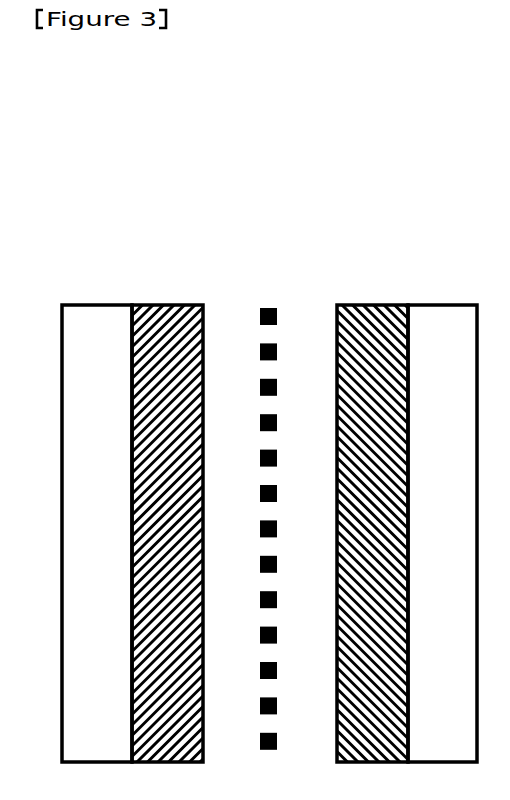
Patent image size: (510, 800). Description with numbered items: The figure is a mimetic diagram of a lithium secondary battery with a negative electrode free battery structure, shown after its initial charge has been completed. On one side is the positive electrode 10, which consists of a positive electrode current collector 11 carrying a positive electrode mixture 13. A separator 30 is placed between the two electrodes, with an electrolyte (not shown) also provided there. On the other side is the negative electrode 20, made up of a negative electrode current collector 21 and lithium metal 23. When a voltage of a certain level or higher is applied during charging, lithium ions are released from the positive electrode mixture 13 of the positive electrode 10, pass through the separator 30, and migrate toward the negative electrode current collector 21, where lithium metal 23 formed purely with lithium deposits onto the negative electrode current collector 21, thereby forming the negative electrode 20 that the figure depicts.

The positive electrode 10 is at (202, 141).
The positive electrode current collector 11 is at (101, 305).
The positive electrode mixture 13 is at (169, 305).
The separator 30 is at (276, 306).
The negative electrode 20 is at (465, 141).
The lithium metal 23 is at (375, 305).
The negative electrode current collector 21 is at (443, 305).